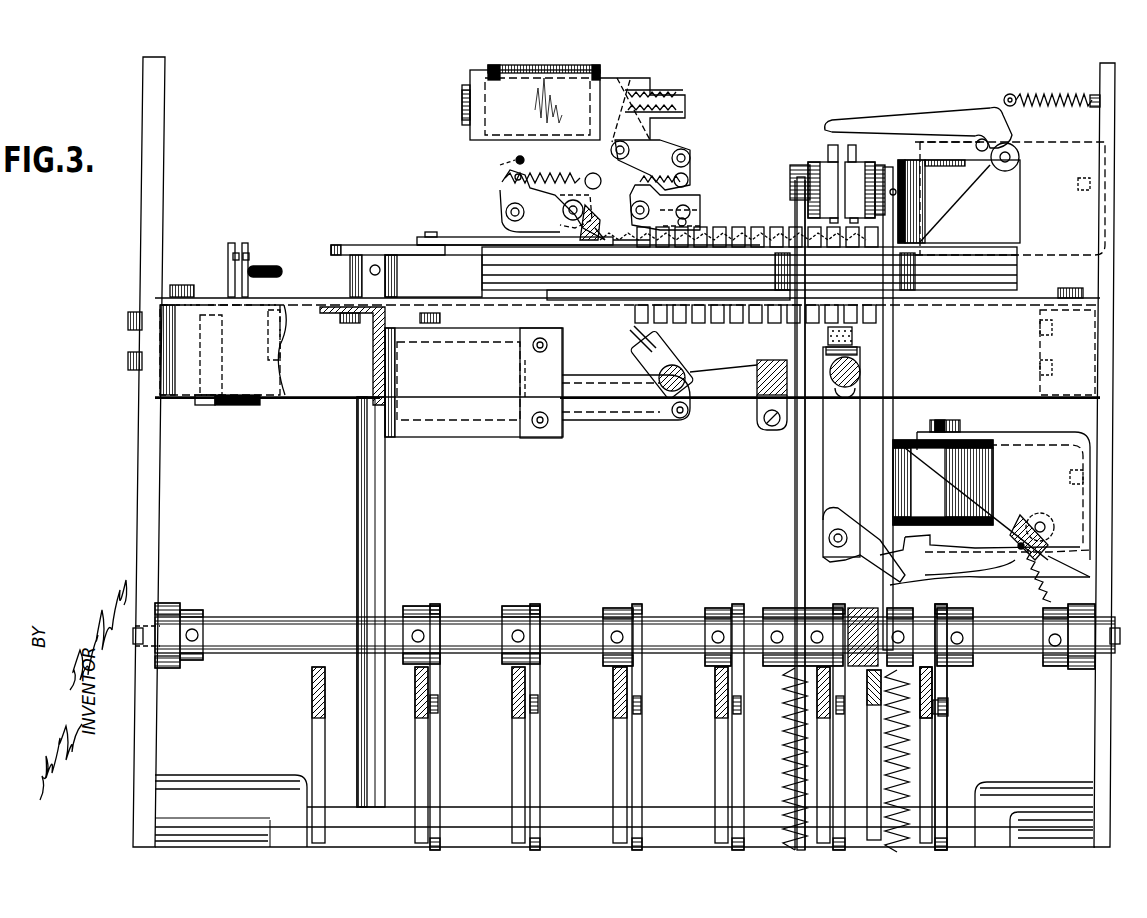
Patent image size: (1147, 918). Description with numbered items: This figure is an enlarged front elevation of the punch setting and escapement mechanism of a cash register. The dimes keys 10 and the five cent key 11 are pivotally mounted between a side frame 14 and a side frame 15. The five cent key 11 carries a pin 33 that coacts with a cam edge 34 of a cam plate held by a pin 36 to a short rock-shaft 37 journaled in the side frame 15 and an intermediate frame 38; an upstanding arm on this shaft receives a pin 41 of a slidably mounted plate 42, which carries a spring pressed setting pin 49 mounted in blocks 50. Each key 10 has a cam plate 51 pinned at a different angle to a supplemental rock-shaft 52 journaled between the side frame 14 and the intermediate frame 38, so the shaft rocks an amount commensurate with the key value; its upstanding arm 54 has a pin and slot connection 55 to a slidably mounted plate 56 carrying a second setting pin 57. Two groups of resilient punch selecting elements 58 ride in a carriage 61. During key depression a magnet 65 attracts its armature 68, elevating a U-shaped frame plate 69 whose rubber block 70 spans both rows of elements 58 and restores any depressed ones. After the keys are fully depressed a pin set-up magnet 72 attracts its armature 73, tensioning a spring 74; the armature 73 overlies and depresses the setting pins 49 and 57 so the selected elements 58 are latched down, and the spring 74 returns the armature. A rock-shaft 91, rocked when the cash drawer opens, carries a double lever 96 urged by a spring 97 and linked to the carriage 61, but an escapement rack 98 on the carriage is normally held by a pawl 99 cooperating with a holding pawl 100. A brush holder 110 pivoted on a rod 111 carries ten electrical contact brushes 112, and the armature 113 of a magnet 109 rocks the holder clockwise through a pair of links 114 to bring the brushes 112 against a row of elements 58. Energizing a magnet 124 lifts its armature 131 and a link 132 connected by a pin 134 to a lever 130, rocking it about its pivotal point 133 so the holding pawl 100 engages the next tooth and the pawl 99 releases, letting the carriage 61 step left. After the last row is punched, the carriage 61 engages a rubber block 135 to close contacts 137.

The dimes keys 10 is at (320, 757).
The five cent key 11 is at (933, 686).
The side frame 14 is at (152, 572).
The side frame 15 is at (1095, 727).
The pin 33 is at (950, 712).
The cam edge 34 is at (942, 772).
The pin 36 is at (1030, 565).
The rock-shaft 37 is at (882, 590).
The intermediate frame 38 is at (870, 732).
The pin 41 is at (890, 195).
The slidably mounted plate 42 is at (880, 168).
The setting pin 49 is at (848, 165).
The blocks 50 is at (862, 168).
The cam plate 51 is at (513, 710).
The supplemental rock-shaft 52 is at (468, 615).
The upstanding arm 54 is at (795, 525).
The pin and slot connection 55 is at (795, 188).
The slidably mounted plate 56 is at (792, 167).
The setting pin 57 is at (827, 150).
The punch selecting elements 58 is at (768, 233).
The carriage 61 is at (701, 273).
The magnet 65 is at (905, 440).
The armature 68 is at (948, 552).
The U-shaped frame plate 69 is at (838, 462).
The block 70 is at (855, 336).
The pin set-up magnet 72 is at (938, 184).
The armature 73 is at (938, 142).
The spring 74 is at (1040, 95).
The rock-shaft 91 is at (355, 578).
The double lever 96 is at (395, 248).
The spring 97 is at (455, 240).
The escapement rack 98 is at (512, 240).
The pawl 99 is at (690, 214).
The holding pawl 100 is at (555, 192).
The magnet 109 is at (470, 430).
The brush holder 110 is at (680, 362).
The rod 111 is at (657, 380).
The electrical contact brushes 112 is at (630, 338).
The armature 113 is at (553, 370).
The links 114 is at (598, 422).
The magnet 124 is at (503, 160).
The lever 130 is at (605, 172).
The armature 131 is at (652, 82).
The link 132 is at (689, 165).
The pivotal point 133 is at (623, 222).
The pin 134 is at (679, 203).
The rubber block 135 is at (278, 266).
The contacts 137 is at (238, 252).